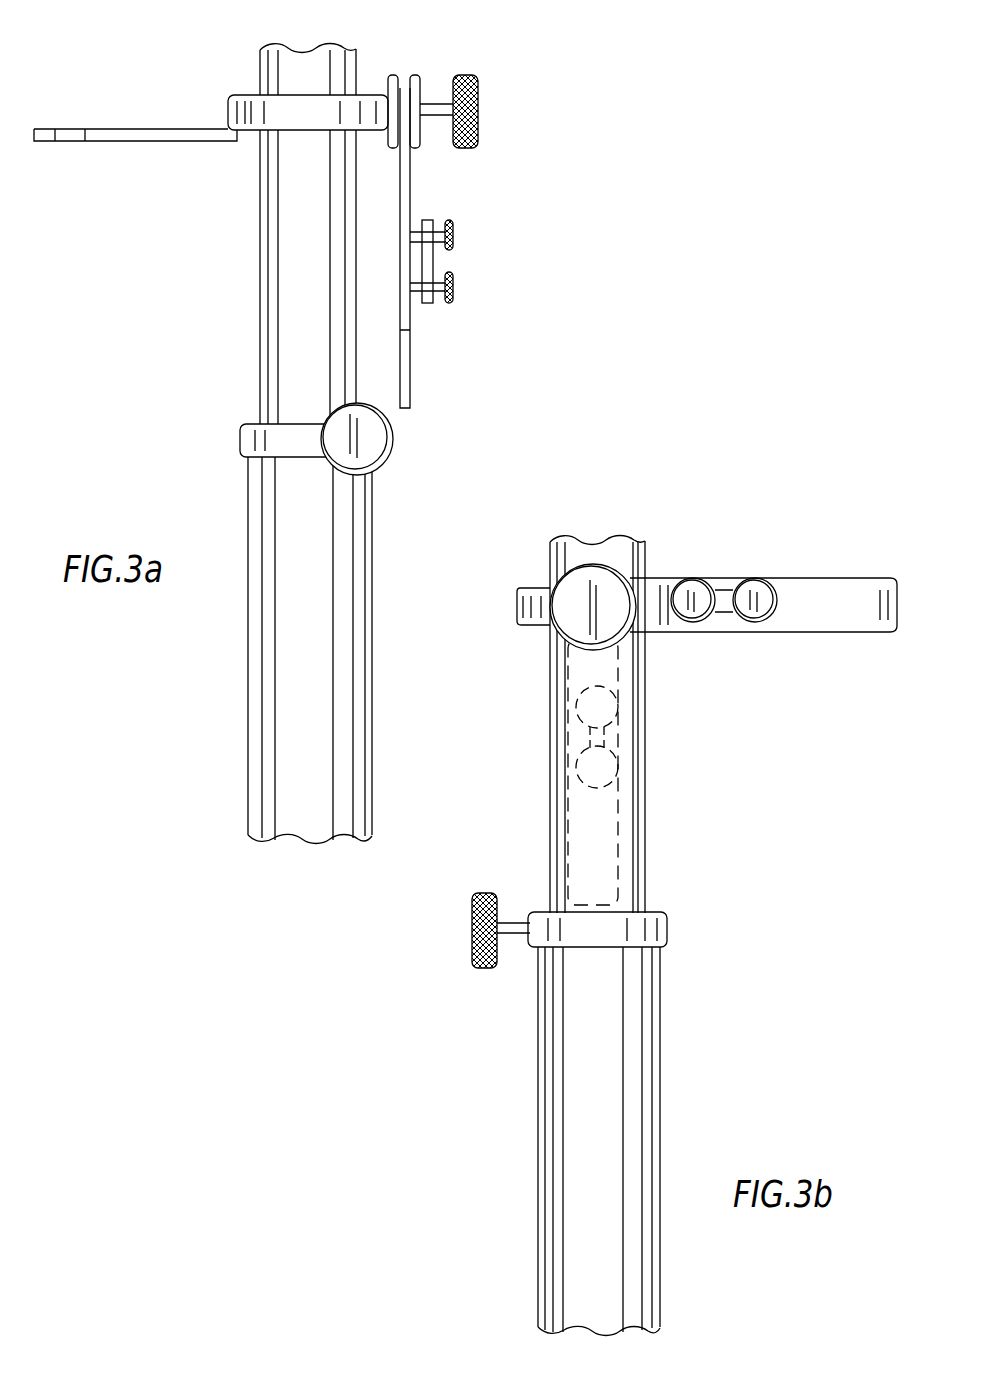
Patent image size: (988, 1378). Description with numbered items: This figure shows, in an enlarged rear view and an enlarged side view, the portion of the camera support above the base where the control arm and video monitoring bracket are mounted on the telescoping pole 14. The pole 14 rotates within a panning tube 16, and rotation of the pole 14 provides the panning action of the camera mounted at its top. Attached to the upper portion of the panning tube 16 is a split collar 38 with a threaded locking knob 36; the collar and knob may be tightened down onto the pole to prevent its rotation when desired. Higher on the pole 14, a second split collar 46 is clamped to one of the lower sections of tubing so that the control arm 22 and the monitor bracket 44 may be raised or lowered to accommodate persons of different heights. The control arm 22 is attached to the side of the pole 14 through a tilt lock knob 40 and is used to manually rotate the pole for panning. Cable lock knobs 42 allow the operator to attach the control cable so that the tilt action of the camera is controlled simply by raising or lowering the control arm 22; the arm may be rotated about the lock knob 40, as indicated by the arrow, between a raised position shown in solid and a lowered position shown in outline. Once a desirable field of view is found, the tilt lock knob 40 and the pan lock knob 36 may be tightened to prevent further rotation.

In FIG. 3A, the telescoping pole 14 is at (338, 80).
In FIG. 3B, the telescoping pole 14 is at (603, 695).
In FIG. 3A, the panning tube 16 is at (345, 560).
In FIG. 3B, the panning tube 16 is at (557, 1136).
In FIG. 3A, the control arm 22 is at (407, 381).
In FIG. 3B, the control arm 22 is at (838, 598).
In FIG. 3A, the locking knob 36 is at (393, 440).
In FIG. 3B, the locking knob 36 is at (473, 927).
In FIG. 3A, the split collar 38 is at (250, 438).
In FIG. 3A, the tilt lock knob 40 is at (478, 112).
In FIG. 3B, the tilt lock knob 40 is at (588, 565).
In FIG. 3A, the cable lock knobs 42 is at (455, 288).
In FIG. 3B, the cable lock knobs 42 is at (625, 747).
In FIG. 3A, the monitor bracket 44 is at (46, 143).
In FIG. 3A, the split collar 46 is at (252, 108).